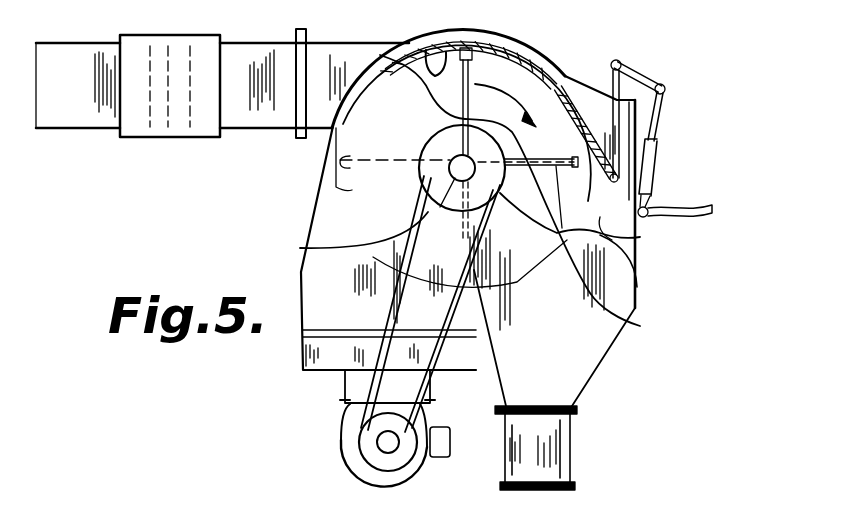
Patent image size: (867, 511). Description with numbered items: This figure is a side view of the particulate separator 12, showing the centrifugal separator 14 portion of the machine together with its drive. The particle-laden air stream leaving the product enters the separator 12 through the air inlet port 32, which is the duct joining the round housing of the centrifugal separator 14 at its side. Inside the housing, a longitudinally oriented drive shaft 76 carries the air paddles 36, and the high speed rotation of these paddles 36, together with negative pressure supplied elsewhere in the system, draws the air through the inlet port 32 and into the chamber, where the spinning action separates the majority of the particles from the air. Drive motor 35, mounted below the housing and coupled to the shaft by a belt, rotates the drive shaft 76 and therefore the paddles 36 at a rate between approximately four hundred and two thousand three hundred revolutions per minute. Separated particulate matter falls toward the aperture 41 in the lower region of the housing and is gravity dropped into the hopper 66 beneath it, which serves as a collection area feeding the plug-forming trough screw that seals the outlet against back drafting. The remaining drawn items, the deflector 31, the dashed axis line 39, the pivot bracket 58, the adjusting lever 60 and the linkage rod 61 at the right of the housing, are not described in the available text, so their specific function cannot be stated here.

The particulate separator 12 is at (702, 130).
The centrifugal separator 14 is at (526, 41).
The deflector 31 is at (425, 50).
The air inlet port 32 is at (327, 93).
The drive motor 35 is at (340, 432).
The air paddles 36 is at (622, 318).
The rotor axis 39 is at (355, 216).
The aperture 41 is at (637, 288).
The pivot bracket 58 is at (640, 238).
The adjusting lever 60 is at (692, 200).
The linkage rod 61 is at (665, 85).
The hopper 66 is at (552, 446).
The drive shaft 76 is at (300, 248).